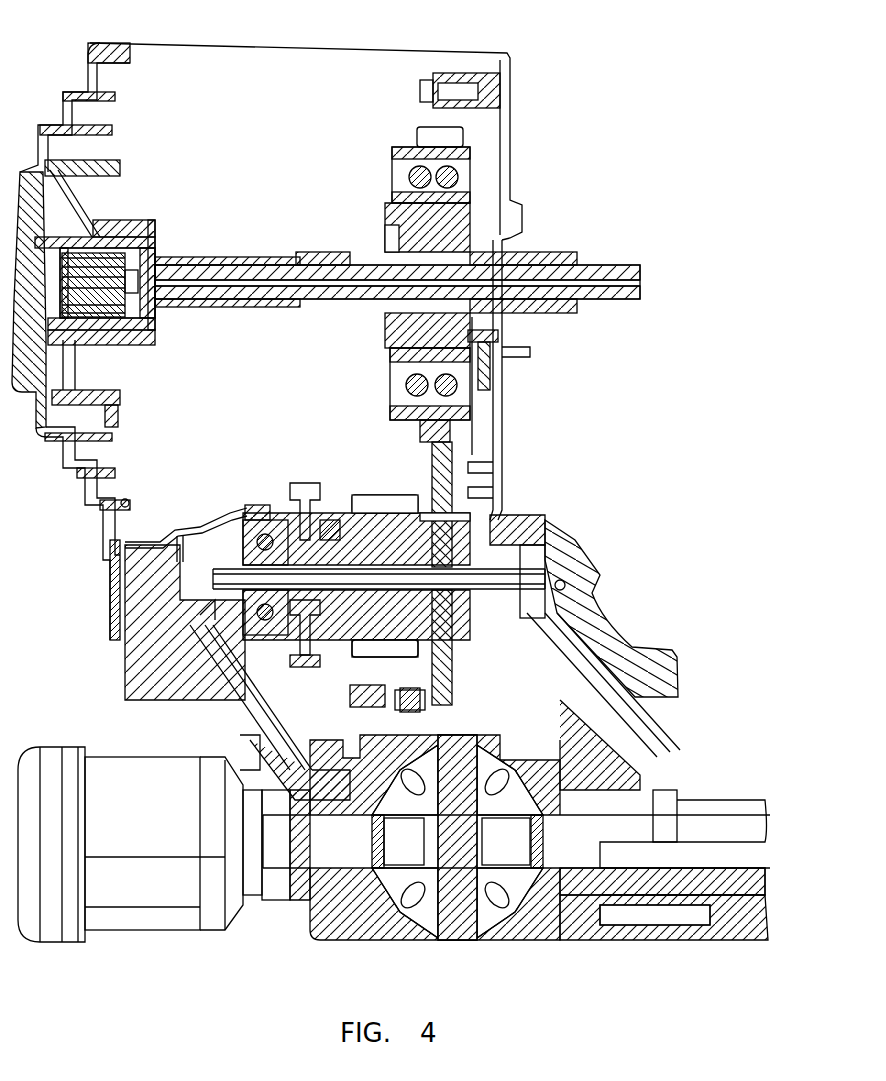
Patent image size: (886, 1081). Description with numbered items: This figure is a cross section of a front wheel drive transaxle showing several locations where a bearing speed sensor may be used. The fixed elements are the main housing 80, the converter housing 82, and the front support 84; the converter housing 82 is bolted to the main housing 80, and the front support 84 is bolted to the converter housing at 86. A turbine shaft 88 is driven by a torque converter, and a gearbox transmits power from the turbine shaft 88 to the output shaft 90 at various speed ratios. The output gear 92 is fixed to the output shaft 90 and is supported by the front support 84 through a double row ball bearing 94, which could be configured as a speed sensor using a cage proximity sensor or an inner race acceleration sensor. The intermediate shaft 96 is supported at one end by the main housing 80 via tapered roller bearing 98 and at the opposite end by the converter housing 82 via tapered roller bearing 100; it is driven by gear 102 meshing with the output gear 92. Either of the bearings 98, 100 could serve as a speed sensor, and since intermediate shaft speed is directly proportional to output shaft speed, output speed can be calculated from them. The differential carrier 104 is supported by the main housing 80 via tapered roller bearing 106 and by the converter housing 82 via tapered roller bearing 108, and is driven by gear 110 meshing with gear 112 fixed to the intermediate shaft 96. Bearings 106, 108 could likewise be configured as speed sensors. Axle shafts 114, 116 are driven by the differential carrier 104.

The main housing 80 is at (108, 604).
The converter housing 82 is at (677, 667).
The front support 84 is at (495, 372).
The bolt 86 is at (447, 78).
The turbine shaft 88 is at (593, 262).
The output shaft 90 is at (385, 225).
The output gear 92 is at (425, 127).
The double row ball bearing 94 is at (400, 162).
The intermediate shaft 96 is at (312, 532).
The tapered roller bearing 98 is at (235, 610).
The tapered roller bearing 100 is at (540, 528).
The gear 102 is at (455, 670).
The differential carrier 104 is at (510, 758).
The tapered roller bearing 106 is at (250, 738).
The tapered roller bearing 108 is at (638, 748).
The gear 110 is at (355, 660).
The gear 112 is at (385, 500).
The axle shaft 114 is at (108, 755).
The axle shaft 116 is at (740, 798).